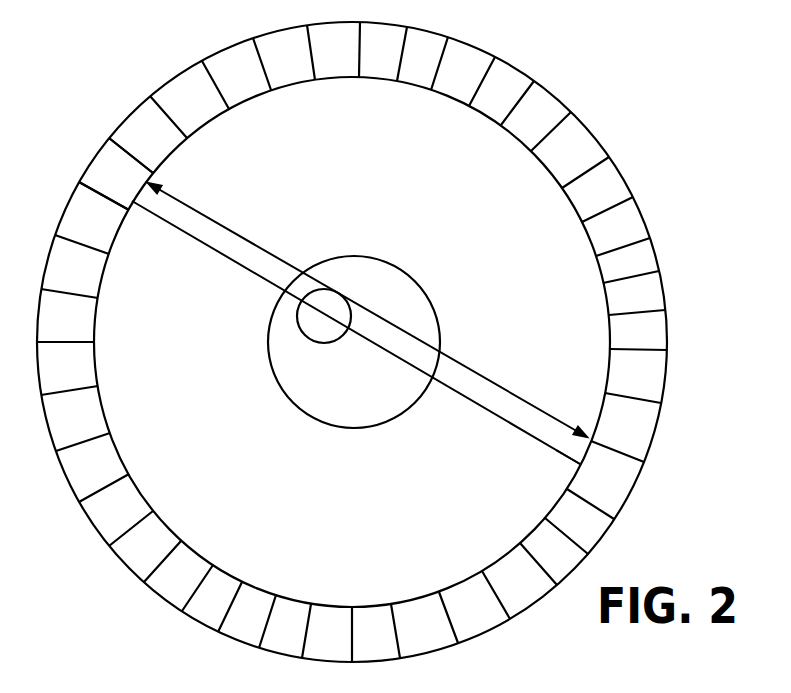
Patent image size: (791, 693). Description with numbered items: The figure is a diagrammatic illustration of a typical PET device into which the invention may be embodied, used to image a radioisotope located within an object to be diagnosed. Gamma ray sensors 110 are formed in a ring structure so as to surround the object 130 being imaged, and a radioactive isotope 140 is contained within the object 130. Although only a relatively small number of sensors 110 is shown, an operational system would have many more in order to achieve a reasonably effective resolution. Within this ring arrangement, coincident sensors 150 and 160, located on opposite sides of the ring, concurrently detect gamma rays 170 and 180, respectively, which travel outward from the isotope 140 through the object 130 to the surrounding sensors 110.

The gamma ray sensors 110 is at (648, 200).
The object 130 is at (361, 393).
The radioactive isotope 140 is at (309, 348).
The coincident sensor 150 is at (108, 173).
The coincident sensor 160 is at (587, 473).
The gamma ray 170 is at (195, 209).
The gamma ray 180 is at (507, 390).